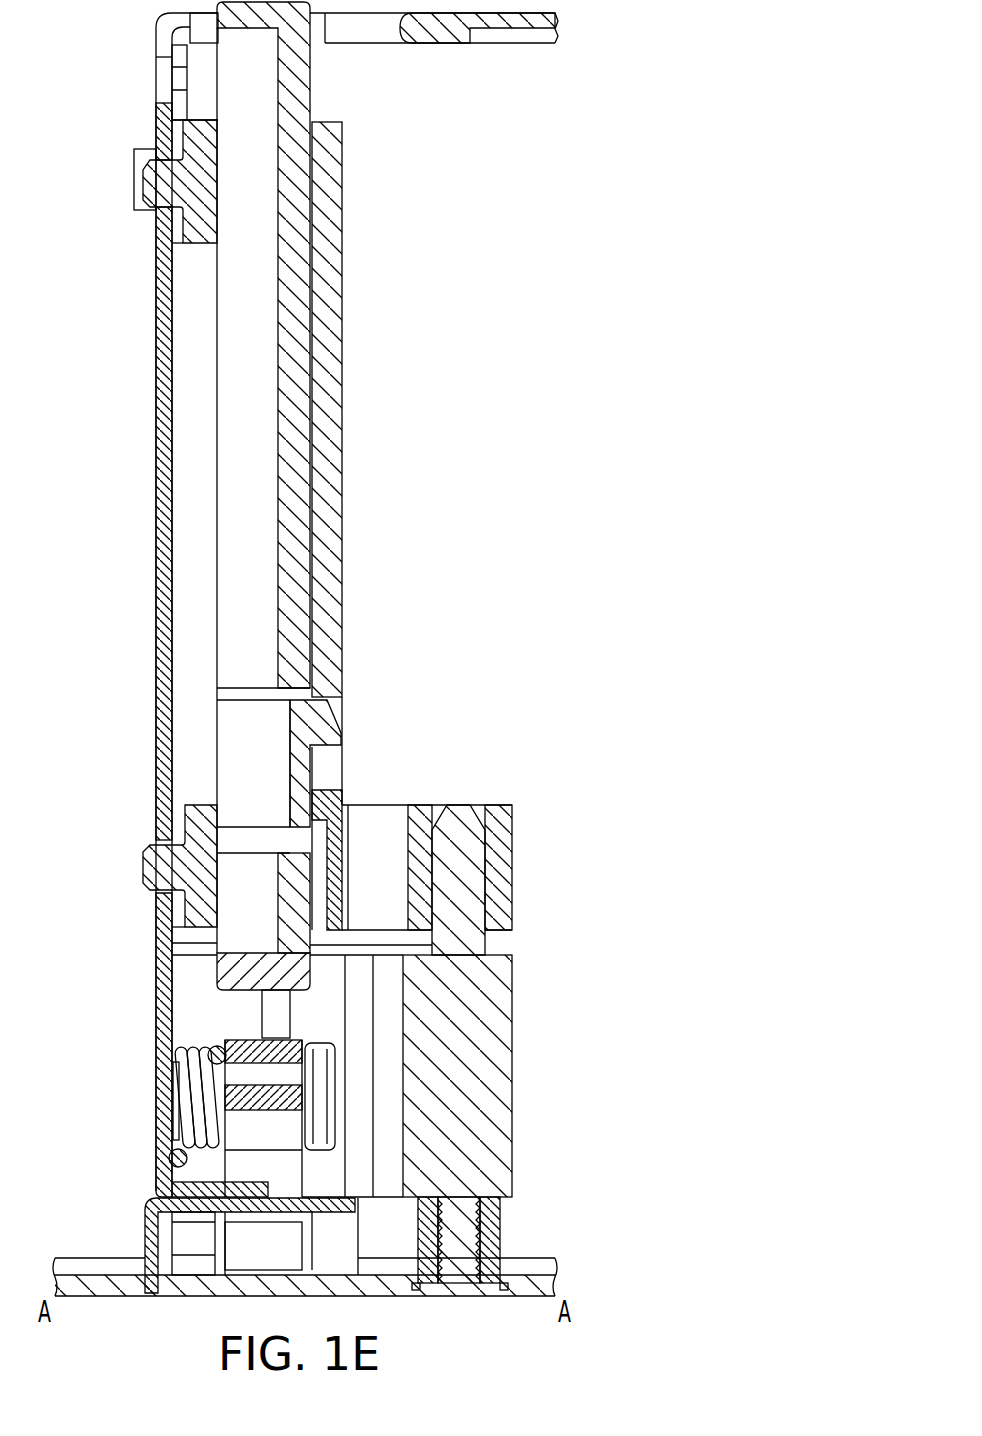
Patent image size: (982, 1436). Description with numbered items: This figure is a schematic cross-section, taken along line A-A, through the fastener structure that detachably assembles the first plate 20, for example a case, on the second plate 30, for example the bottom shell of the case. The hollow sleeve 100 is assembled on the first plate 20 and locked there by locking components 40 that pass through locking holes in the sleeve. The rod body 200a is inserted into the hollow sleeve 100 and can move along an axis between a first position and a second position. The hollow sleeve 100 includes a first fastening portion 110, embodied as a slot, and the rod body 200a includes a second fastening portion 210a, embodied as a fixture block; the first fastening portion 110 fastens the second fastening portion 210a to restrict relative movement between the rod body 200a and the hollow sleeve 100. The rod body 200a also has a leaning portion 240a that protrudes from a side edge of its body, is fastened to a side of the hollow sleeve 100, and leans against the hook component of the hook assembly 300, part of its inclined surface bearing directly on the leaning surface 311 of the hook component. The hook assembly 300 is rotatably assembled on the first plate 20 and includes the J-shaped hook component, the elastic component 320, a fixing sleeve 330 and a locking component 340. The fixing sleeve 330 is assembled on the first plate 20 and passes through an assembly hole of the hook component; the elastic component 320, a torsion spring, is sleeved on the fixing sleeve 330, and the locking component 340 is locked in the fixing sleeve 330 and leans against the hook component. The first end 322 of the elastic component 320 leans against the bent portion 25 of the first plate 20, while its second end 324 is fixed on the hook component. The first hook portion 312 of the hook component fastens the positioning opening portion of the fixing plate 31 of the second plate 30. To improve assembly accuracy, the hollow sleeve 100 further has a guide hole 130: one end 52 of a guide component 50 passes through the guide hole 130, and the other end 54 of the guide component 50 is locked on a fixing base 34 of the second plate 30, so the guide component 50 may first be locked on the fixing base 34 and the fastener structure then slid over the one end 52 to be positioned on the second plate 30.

The first plate 20 is at (157, 128).
The locking component 40 is at (160, 189).
The rod body 200a is at (298, 351).
The hollow sleeve 100 is at (325, 401).
The second fastening portion 210a is at (322, 722).
The first fastening portion 110 is at (320, 788).
The one end 52 is at (458, 812).
The guide hole 130 is at (487, 816).
The leaning portion 240a is at (230, 976).
The hook assembly 300 is at (332, 1025).
The leaning surface 311 is at (246, 1038).
The second end 324 is at (215, 1062).
The elastic component 320 is at (191, 1094).
The fixing sleeve 330 is at (174, 1112).
The first end 322 is at (174, 1159).
The bent portion 25 is at (220, 1185).
The guide component 50 is at (512, 1051).
The locking component 340 is at (332, 1098).
The fixing plate 31 is at (205, 1224).
The first hook portion 312 is at (247, 1252).
The fixing base 34 is at (500, 1233).
The second plate 30 is at (98, 1285).
The other end 54 is at (460, 1248).